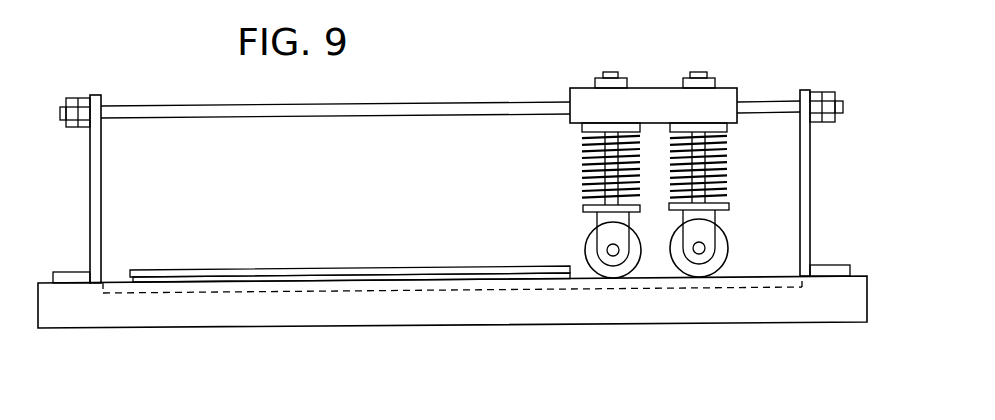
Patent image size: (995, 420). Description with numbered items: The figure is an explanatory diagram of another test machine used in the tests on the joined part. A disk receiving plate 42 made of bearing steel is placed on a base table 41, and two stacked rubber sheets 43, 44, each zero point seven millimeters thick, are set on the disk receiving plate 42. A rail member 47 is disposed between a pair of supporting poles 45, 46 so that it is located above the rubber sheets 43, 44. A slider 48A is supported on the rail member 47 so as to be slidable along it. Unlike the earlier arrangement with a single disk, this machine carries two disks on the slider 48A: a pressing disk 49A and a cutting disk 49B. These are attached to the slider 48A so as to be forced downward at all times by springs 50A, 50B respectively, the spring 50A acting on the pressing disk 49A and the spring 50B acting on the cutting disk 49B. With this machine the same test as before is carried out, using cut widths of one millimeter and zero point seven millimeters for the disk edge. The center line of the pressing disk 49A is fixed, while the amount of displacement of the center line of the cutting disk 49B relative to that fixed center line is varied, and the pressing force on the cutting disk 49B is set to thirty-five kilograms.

The base table 41 is at (352, 326).
The disk receiving plate 42 is at (663, 287).
The rubber sheet 43 is at (163, 269).
The rubber sheet 44 is at (256, 273).
The supporting pole 45 is at (89, 205).
The supporting pole 46 is at (811, 182).
The rail member 47 is at (416, 103).
The slider 48A is at (662, 88).
The pressing disk 49A is at (585, 239).
The cutting disk 49B is at (727, 250).
The spring 50A is at (583, 148).
The spring 50B is at (755, 186).